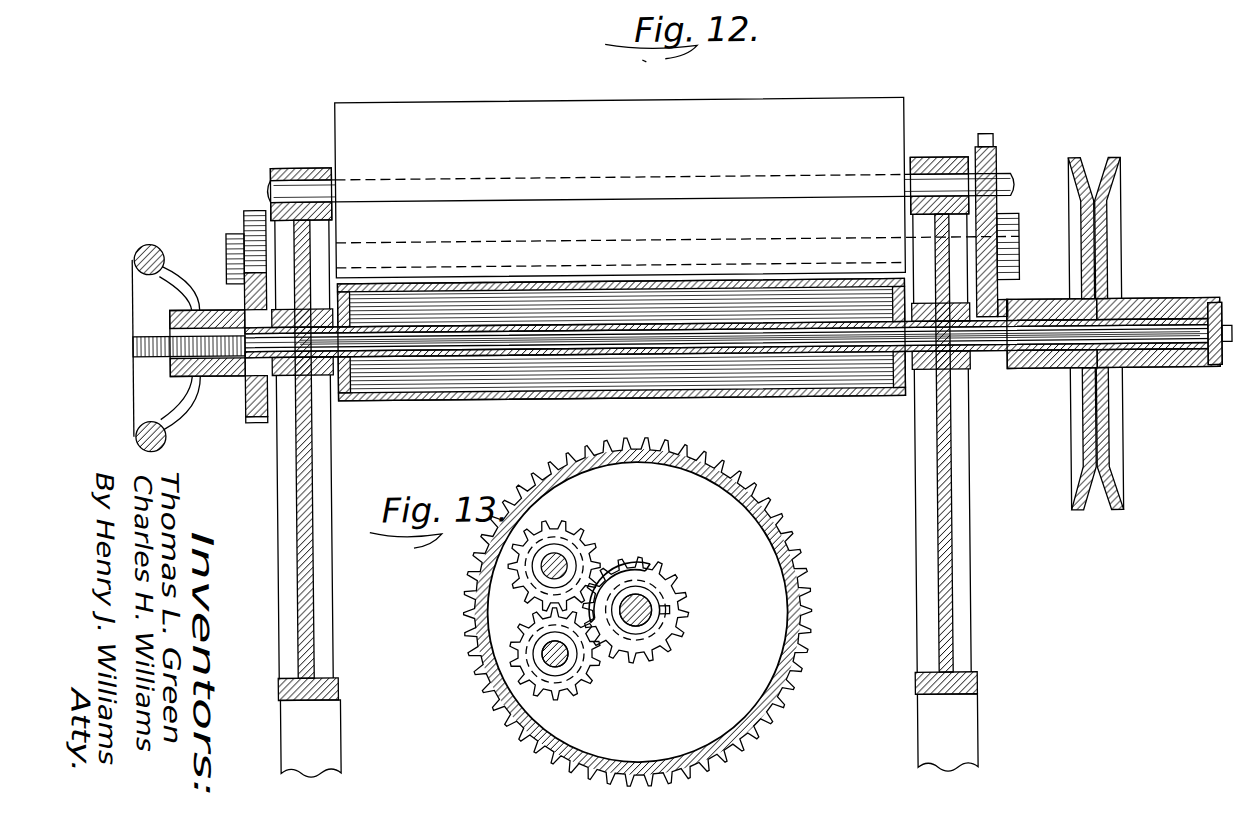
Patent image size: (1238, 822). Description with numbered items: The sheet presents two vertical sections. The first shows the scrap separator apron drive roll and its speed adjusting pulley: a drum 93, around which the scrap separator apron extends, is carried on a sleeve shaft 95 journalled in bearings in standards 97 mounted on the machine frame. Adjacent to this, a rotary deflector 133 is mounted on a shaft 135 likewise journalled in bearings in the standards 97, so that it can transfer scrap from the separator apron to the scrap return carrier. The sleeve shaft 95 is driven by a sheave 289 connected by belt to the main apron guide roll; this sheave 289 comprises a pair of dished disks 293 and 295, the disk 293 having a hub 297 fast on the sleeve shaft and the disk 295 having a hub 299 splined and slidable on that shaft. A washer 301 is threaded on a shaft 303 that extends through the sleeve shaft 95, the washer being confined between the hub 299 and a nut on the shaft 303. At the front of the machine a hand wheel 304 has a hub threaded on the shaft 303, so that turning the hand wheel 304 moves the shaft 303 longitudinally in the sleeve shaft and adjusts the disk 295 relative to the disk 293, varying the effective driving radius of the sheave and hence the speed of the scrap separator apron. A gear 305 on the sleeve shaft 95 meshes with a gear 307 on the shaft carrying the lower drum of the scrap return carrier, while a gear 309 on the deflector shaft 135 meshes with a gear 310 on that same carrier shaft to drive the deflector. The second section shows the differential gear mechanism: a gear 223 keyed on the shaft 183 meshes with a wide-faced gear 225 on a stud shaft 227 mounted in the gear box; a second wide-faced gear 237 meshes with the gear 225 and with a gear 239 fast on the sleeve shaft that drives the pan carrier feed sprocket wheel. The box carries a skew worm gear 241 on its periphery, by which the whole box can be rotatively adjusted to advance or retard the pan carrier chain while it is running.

In FIG. 12, the rotary deflector 133 is at (845, 110).
In FIG. 12, the standards 97 is at (298, 618).
In FIG. 12, the sleeve shaft 95 is at (475, 357).
In FIG. 12, the drum 93 is at (543, 393).
In FIG. 12, the shaft 303 is at (812, 338).
In FIG. 12, the hand wheel 304 is at (150, 254).
In FIG. 12, the gear 305 is at (260, 413).
In FIG. 12, the gear 307 is at (232, 214).
In FIG. 12, the shaft 135 is at (1003, 185).
In FIG. 12, the gear 309 is at (990, 137).
In FIG. 12, the gear 310 is at (990, 253).
In FIG. 12, the sheave 289 is at (1113, 314).
In FIG. 12, the dished disk 293 is at (1077, 162).
In FIG. 12, the dished disk 295 is at (1113, 161).
In FIG. 12, the pulley hub 297 is at (1033, 372).
In FIG. 12, the hub 299 is at (1160, 372).
In FIG. 12, the washer 301 is at (1213, 306).
In FIG. 13, the skew worm gear 241 is at (463, 637).
In FIG. 13, the wide-faced gear 237 is at (580, 537).
In FIG. 13, the stud shaft 227 is at (555, 660).
In FIG. 13, the gear 223 is at (685, 608).
In FIG. 13, the gear 239 is at (647, 560).
In FIG. 13, the shaft 183 is at (634, 617).
In FIG. 13, the wide-faced gear 225 is at (517, 687).